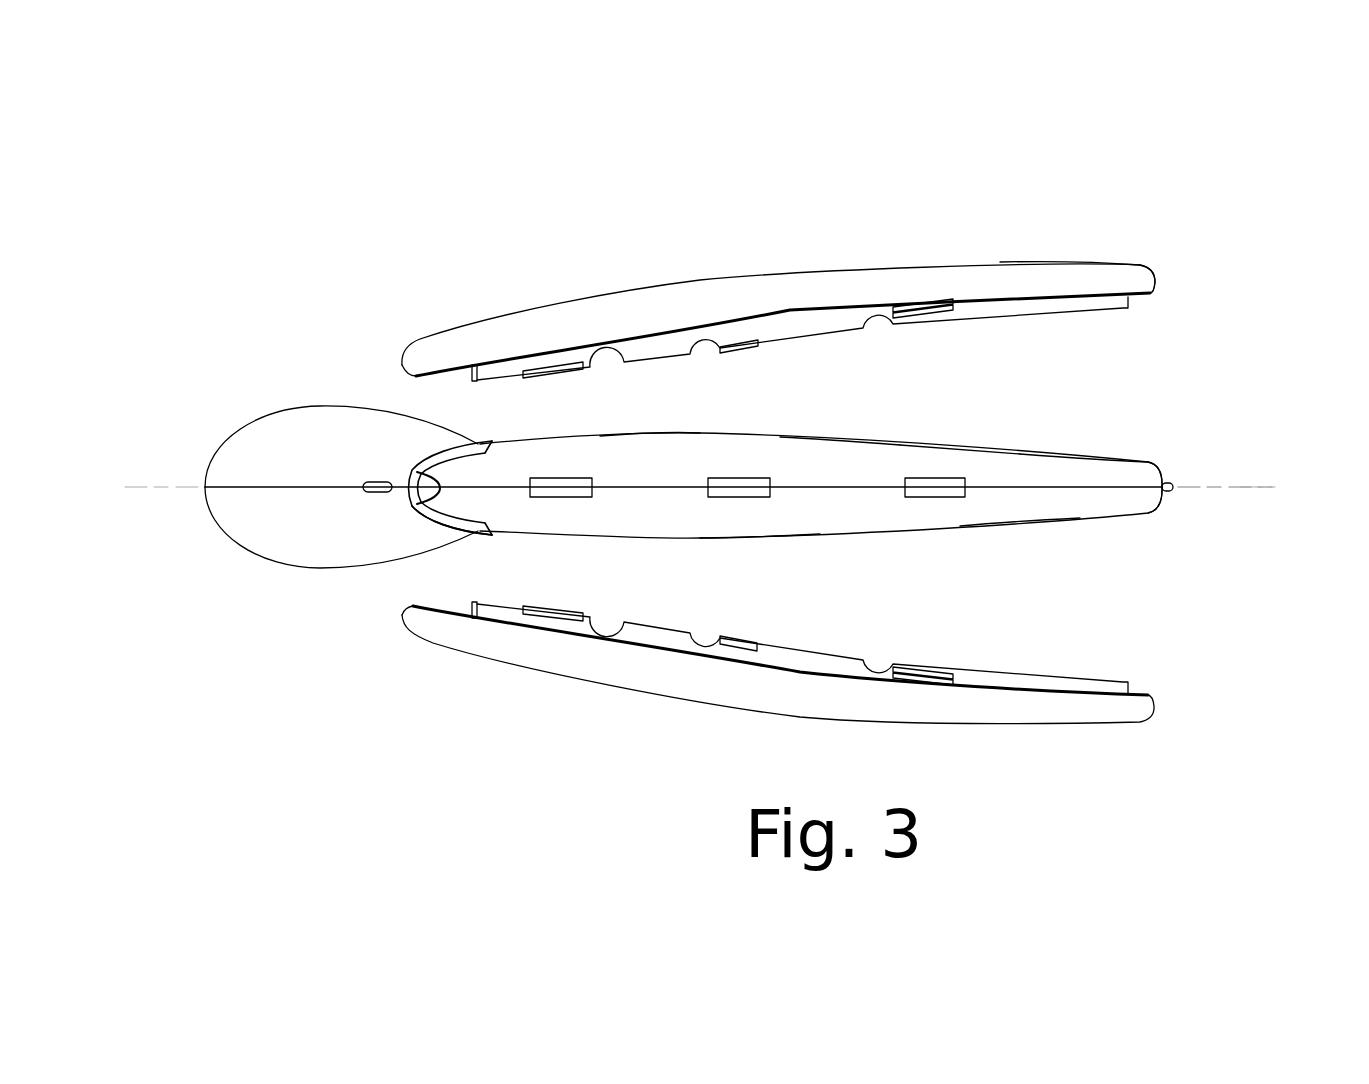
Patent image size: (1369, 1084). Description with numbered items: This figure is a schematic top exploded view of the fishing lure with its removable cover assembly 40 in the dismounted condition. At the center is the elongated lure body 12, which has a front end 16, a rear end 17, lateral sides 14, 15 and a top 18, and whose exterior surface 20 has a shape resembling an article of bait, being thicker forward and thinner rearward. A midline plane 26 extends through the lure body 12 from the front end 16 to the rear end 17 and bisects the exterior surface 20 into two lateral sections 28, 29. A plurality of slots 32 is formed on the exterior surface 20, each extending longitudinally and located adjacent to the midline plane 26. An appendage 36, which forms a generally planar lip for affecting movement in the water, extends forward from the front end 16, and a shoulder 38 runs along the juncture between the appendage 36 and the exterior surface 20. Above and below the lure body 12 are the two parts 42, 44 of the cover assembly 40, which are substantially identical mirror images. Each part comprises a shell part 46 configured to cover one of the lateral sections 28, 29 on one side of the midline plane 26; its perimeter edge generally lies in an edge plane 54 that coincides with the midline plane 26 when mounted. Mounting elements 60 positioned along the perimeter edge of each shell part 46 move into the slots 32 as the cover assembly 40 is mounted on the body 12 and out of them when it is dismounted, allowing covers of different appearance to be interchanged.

The lure body 12 is at (1068, 470).
The lateral side 14 is at (772, 513).
The lateral side 15 is at (835, 465).
The front end 16 is at (455, 465).
The rear end 17 is at (1150, 498).
The top 18 is at (655, 468).
The exterior surface 20 is at (938, 456).
The midline plane 26 is at (1200, 485).
The lateral section 28 is at (990, 473).
The lateral section 29 is at (1012, 505).
The slot 32 is at (563, 486).
The appendage 36 is at (300, 533).
The shoulder 38 is at (430, 527).
The removable cover assembly 40 is at (789, 467).
The part 42 is at (778, 680).
The part 44 is at (789, 275).
The shell part 46 is at (1068, 275).
The edge plane 54 is at (1255, 490).
The mounting element 60 is at (557, 615).